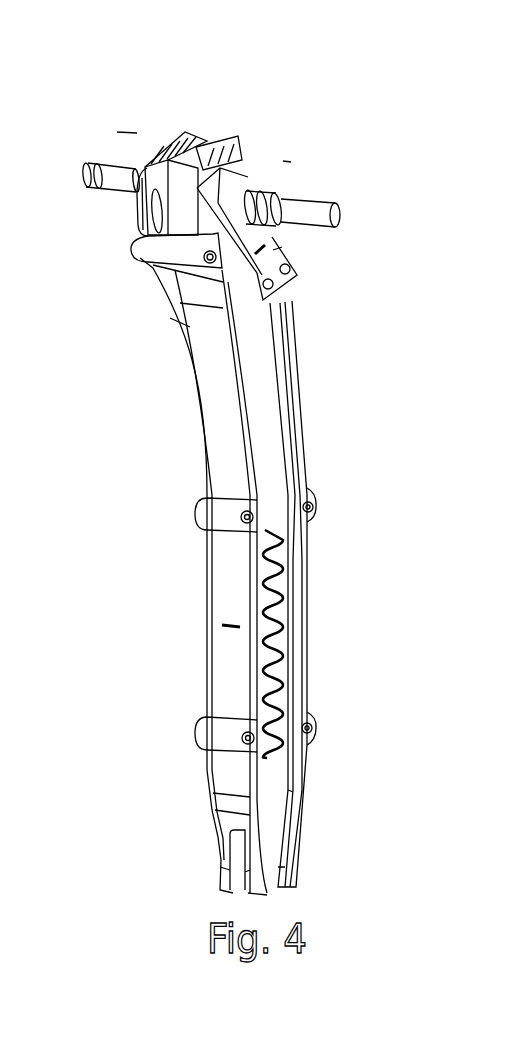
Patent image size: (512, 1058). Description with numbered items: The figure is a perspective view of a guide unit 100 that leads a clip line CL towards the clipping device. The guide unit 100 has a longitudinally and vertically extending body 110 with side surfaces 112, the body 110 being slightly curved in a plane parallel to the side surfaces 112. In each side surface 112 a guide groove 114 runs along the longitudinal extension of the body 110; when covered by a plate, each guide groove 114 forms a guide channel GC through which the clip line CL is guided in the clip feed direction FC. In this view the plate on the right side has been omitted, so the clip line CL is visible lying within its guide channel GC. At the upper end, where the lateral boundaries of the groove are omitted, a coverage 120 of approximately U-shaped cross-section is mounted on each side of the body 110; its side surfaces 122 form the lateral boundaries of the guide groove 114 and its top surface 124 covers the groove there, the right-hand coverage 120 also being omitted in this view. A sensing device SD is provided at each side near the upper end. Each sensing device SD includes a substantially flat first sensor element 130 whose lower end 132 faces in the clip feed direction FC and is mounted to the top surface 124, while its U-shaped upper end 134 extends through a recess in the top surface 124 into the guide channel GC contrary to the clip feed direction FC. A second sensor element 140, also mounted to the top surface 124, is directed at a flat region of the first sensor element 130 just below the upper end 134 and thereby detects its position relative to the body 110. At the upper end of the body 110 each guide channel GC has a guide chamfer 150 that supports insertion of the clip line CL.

The guide unit 100 is at (254, 467).
The body 110 is at (232, 687).
The side surfaces 112 is at (207, 563).
The guide groove 114 is at (273, 774).
The coverage 120 is at (188, 323).
The side surfaces 122 is at (172, 295).
The top surface 124 is at (153, 283).
The first sensor element 130 is at (295, 209).
The lower end 132 is at (280, 247).
The upper end 134 is at (177, 150).
The second sensor element 140 is at (312, 200).
The guide chamfer 150 is at (200, 160).
The guide channel GC is at (157, 158).
The sensing device SD is at (249, 150).
The clip feed direction FC is at (317, 343).
The clip line CL is at (282, 538).